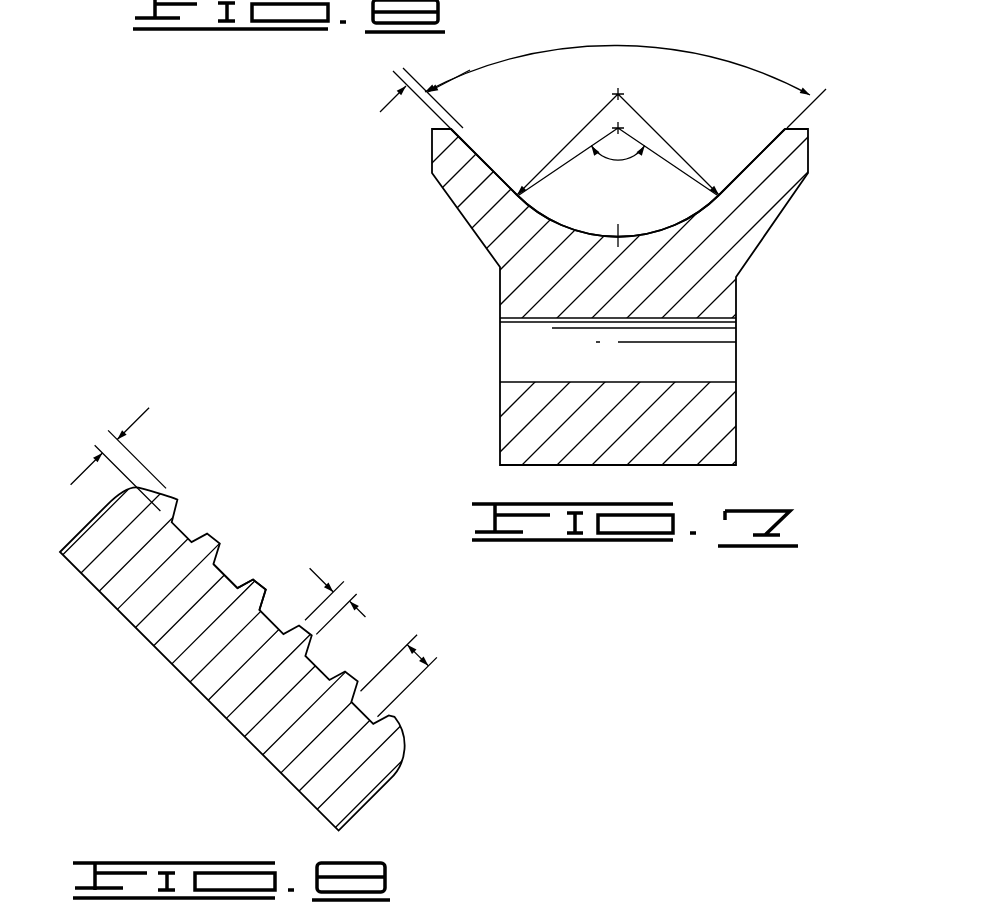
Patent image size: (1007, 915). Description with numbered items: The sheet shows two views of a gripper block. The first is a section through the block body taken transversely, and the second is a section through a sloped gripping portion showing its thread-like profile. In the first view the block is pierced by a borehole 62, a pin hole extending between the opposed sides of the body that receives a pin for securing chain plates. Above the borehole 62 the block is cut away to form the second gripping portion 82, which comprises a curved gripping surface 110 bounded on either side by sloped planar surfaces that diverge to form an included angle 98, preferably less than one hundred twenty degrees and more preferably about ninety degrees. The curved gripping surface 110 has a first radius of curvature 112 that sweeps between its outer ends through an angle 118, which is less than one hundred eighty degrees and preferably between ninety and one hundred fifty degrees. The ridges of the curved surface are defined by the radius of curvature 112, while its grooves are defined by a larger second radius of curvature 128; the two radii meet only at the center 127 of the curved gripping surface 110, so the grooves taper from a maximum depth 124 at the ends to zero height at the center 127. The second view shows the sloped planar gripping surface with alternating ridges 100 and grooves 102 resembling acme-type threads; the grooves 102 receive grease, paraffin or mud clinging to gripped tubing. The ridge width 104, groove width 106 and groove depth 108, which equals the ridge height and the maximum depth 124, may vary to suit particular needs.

In FIG. 7, the borehole 62 is at (533, 382).
In FIG. 7, the second gripping portion 82 is at (657, 238).
In FIG. 7, the curved gripping surface 110 is at (551, 297).
In FIG. 7, the radius of curvature 112 is at (667, 170).
In FIG. 7, the angle 118 is at (630, 160).
In FIG. 7, the maximum depth 124 is at (393, 100).
In FIG. 7, the center 127 is at (612, 241).
In FIG. 7, the second radius of curvature 128 is at (653, 125).
In FIG. 7, the included angle 98 is at (725, 58).
In FIG. 8, the ridges 100 is at (216, 536).
In FIG. 8, the grooves 102 is at (227, 580).
In FIG. 8, the width 104 is at (366, 616).
In FIG. 8, the width 106 is at (421, 657).
In FIG. 8, the depth 108 is at (133, 421).